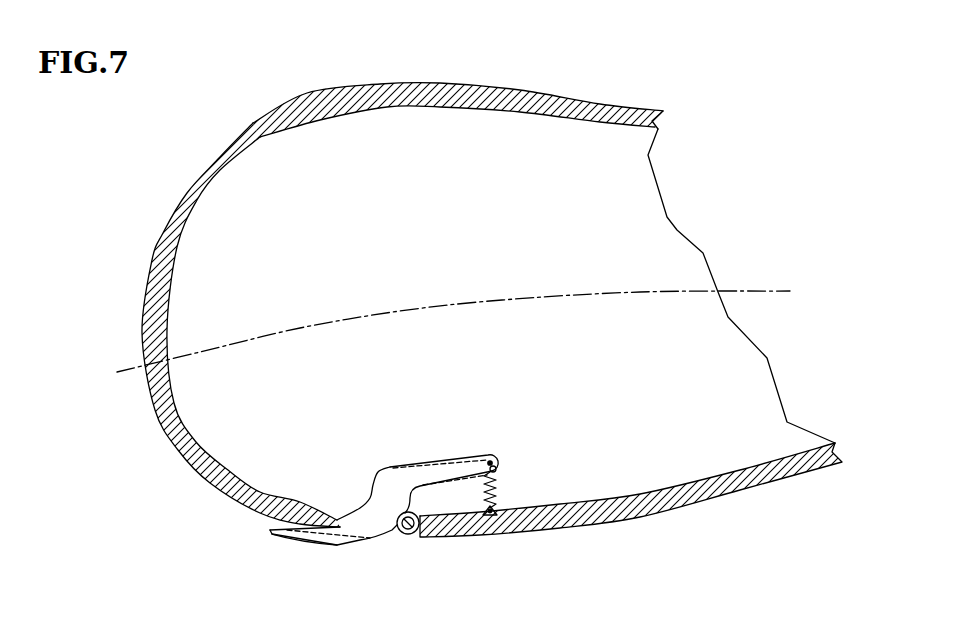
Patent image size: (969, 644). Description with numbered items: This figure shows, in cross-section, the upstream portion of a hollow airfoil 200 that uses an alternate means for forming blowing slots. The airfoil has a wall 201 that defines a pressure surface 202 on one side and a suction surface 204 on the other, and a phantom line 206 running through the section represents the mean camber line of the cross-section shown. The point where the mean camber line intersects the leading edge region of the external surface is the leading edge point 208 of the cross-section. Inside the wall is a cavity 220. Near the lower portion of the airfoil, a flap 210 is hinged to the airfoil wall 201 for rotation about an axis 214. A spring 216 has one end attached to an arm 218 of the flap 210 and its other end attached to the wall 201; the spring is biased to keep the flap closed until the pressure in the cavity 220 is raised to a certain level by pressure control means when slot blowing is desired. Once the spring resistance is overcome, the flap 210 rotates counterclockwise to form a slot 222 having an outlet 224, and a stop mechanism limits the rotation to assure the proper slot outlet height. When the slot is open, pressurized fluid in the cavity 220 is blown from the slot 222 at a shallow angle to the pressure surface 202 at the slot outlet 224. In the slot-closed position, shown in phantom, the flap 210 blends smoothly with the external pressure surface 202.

The hollow airfoil 200 is at (170, 159).
The wall 201 is at (562, 515).
The pressure surface 202 is at (703, 502).
The suction surface 204 is at (495, 83).
The mean camber line 206 is at (502, 300).
The curved side wall 208 is at (143, 365).
The flap 210 is at (362, 528).
The axis 214 is at (407, 530).
The spring 216 is at (495, 492).
The arm 218 is at (473, 457).
The cavity 220 is at (424, 226).
The slot 222 is at (293, 530).
The outlet 224 is at (273, 527).